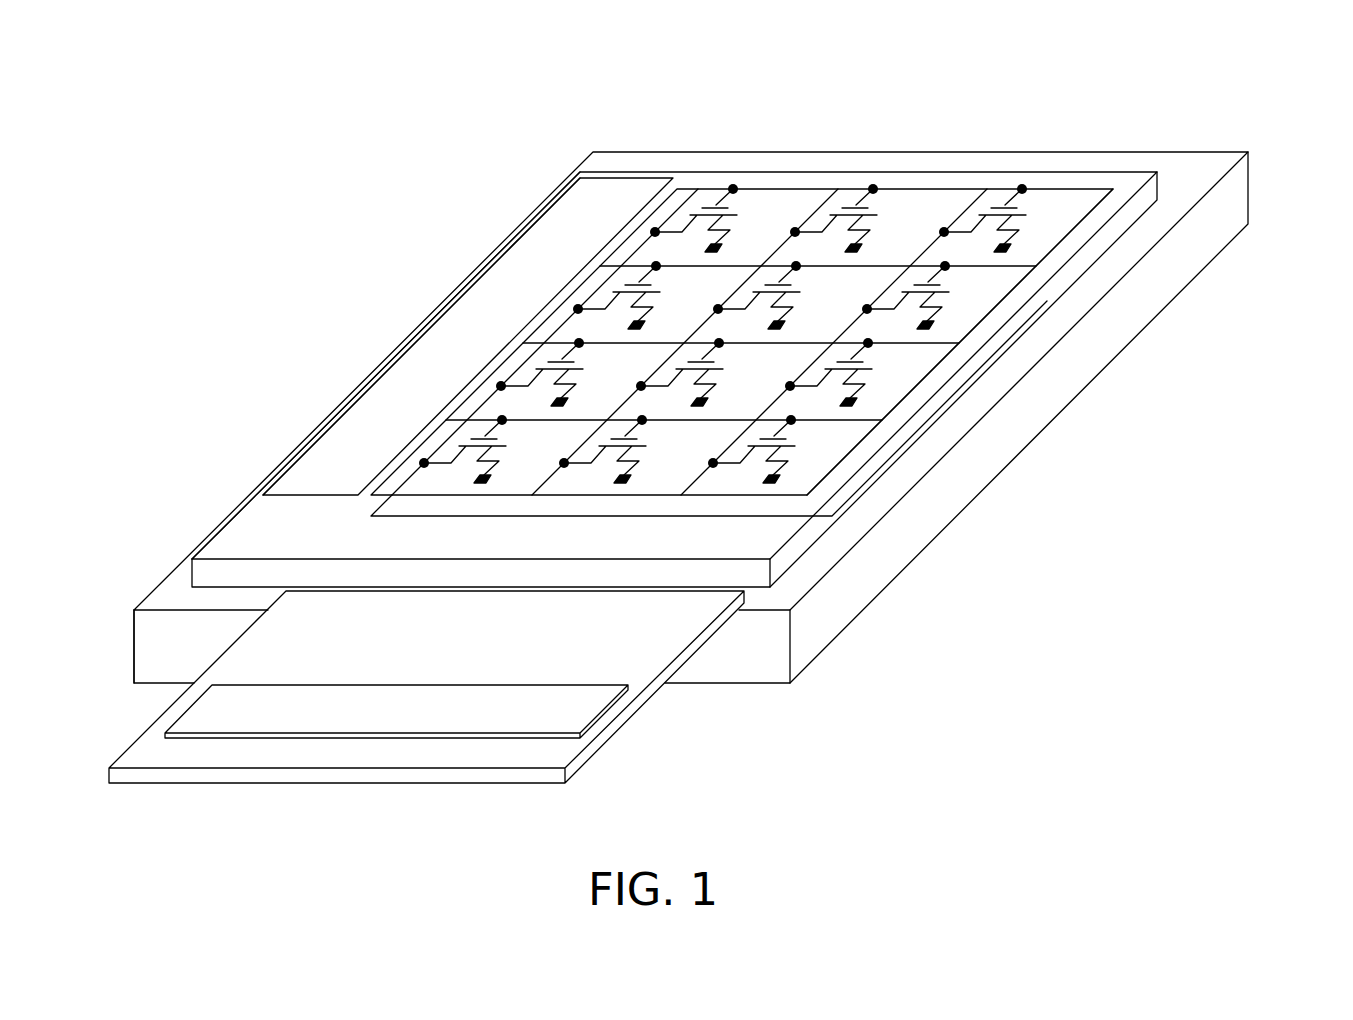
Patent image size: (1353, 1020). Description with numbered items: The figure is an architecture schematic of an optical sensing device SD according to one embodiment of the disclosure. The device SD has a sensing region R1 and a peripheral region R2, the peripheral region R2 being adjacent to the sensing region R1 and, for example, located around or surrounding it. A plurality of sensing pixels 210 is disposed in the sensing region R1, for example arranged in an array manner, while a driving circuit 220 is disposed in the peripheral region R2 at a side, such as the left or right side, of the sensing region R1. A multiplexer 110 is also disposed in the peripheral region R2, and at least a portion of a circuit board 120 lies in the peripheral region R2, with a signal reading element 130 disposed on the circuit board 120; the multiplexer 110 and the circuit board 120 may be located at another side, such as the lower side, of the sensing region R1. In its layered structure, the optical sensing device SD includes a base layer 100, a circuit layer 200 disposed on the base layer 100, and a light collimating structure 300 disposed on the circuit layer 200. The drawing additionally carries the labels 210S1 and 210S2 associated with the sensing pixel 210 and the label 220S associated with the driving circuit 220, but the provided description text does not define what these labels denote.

The optical sensing device SD is at (1178, 95).
The base layer 100 is at (1226, 203).
The multiplexer 110 is at (792, 547).
The circuit board 120 is at (682, 632).
The signal reading element 130 is at (582, 705).
The circuit layer 200 is at (1047, 298).
The sensing pixel 210 is at (775, 202).
The first side surface of first substrate 210S1 is at (1105, 198).
The second surface of first substrate 210S2 is at (1040, 189).
The driving circuit 220 is at (627, 197).
The side surface of second substrate 220S is at (548, 198).
The light collimating structure 300 is at (239, 535).
The sensing region R1 is at (884, 375).
The peripheral region R2 is at (170, 604).